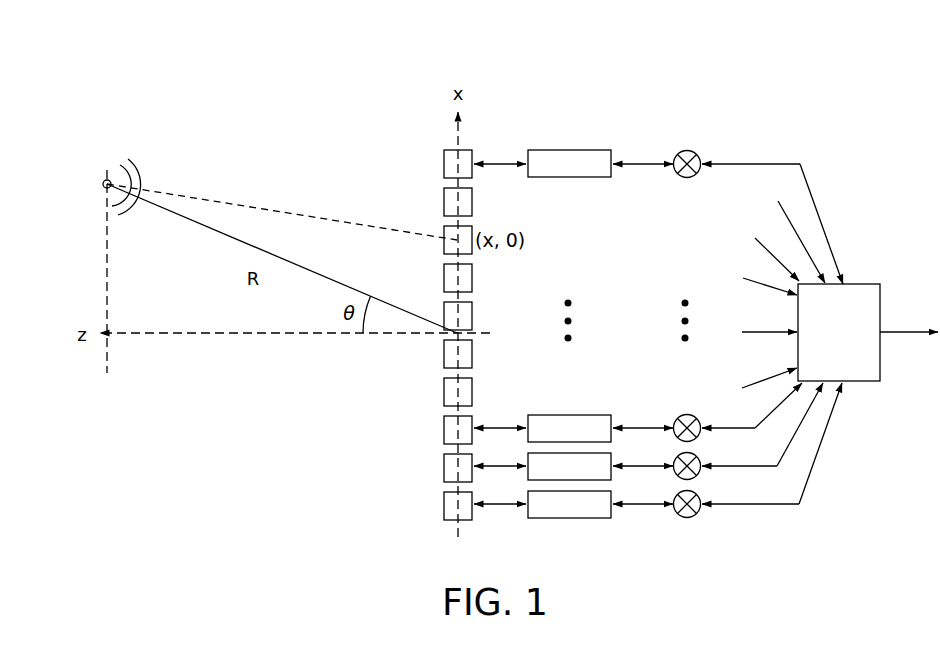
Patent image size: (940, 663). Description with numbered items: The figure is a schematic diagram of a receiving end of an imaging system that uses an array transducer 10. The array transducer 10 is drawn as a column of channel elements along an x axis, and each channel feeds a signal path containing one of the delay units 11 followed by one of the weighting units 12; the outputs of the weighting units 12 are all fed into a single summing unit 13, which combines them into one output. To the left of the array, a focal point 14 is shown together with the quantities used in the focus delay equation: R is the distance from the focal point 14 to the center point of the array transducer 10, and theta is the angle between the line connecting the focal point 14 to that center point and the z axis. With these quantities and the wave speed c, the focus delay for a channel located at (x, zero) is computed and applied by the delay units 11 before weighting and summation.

The array transducer 10 is at (444, 392).
The delay units 11 is at (568, 150).
The weighting units 12 is at (688, 150).
The summing unit 13 is at (863, 292).
The focal point 14 is at (110, 180).